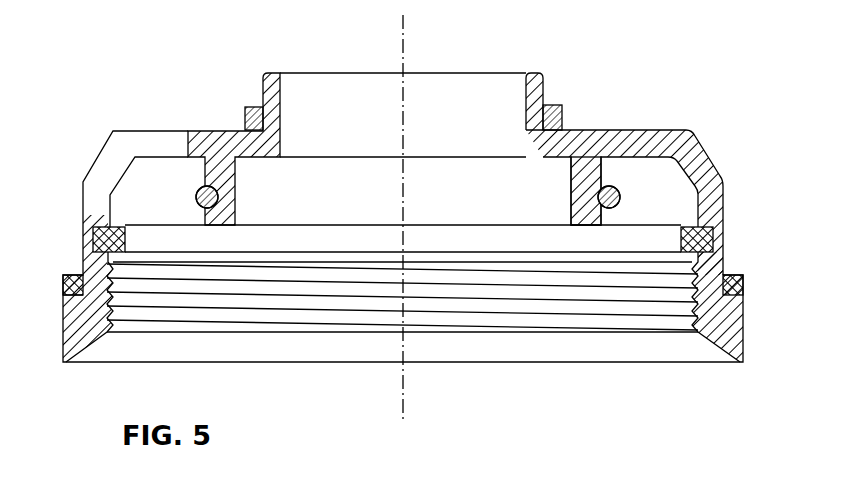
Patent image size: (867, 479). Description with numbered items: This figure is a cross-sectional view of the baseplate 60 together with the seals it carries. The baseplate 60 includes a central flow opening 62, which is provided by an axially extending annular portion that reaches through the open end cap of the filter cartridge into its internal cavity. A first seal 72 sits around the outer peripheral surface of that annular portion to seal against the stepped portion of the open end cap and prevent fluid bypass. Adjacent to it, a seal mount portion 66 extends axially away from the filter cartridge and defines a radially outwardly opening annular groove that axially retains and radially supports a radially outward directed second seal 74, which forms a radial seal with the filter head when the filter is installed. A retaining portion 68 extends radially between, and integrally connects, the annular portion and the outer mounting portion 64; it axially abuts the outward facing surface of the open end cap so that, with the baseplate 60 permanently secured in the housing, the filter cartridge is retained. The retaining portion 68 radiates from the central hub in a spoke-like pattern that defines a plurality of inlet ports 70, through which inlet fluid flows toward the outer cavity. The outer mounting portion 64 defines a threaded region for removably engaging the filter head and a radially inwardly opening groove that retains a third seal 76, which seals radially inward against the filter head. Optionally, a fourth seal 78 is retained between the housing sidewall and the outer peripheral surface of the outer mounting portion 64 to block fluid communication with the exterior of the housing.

The baseplate 60 is at (142, 50).
The flow opening 62 is at (526, 112).
The outer mounting portion 64 is at (735, 320).
The seal mount portion 66 is at (571, 190).
The retaining portion 68 is at (633, 130).
The inlet ports 70 is at (126, 162).
The first seal 72 is at (562, 106).
The second seal 74 is at (611, 195).
The third seal 76 is at (122, 227).
The fourth seal 78 is at (62, 284).